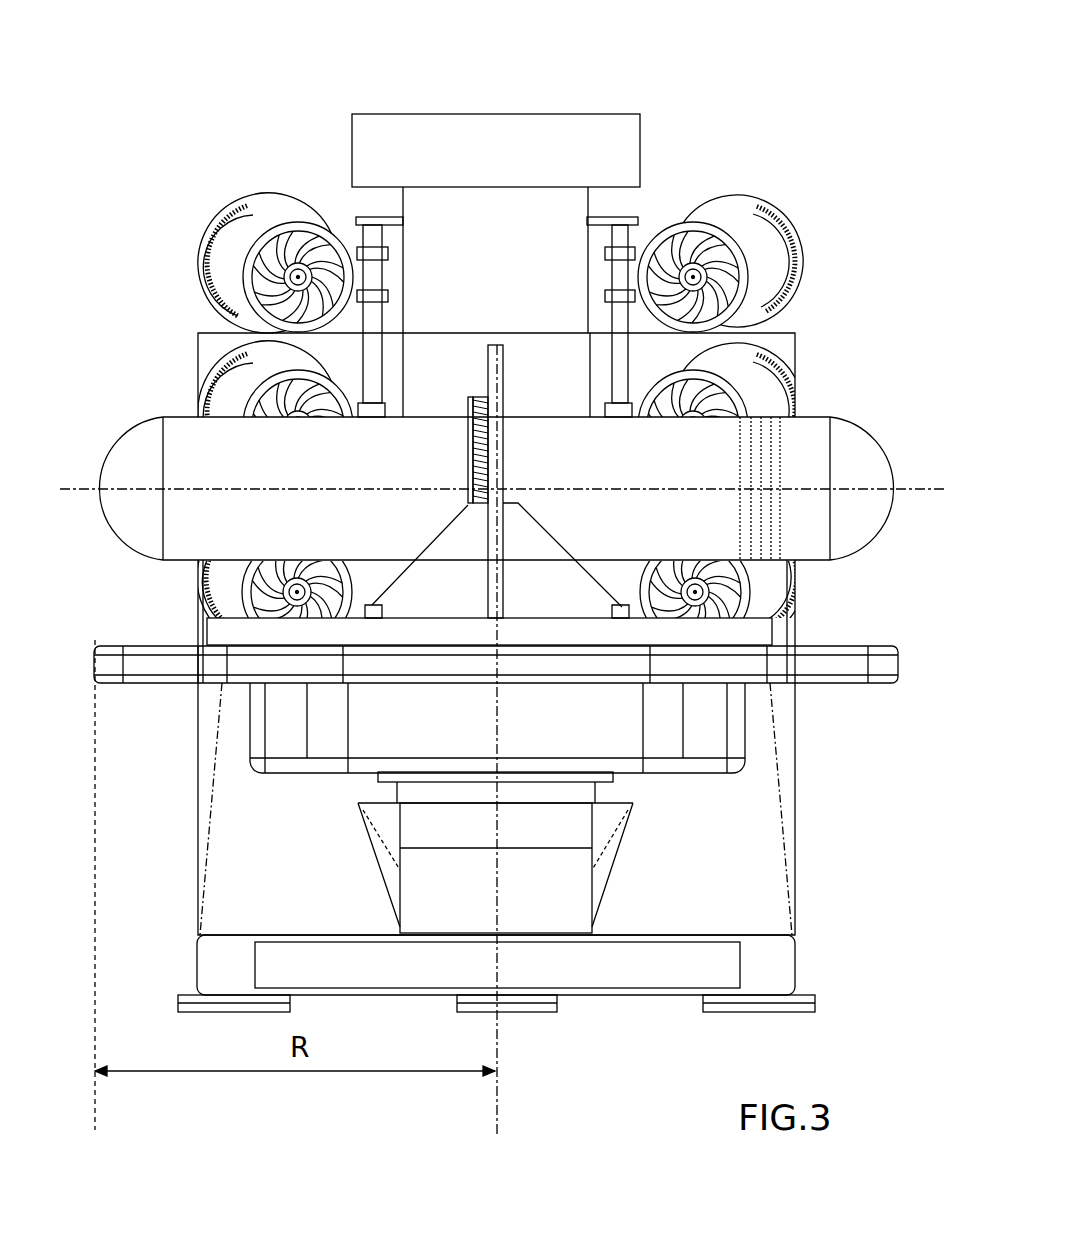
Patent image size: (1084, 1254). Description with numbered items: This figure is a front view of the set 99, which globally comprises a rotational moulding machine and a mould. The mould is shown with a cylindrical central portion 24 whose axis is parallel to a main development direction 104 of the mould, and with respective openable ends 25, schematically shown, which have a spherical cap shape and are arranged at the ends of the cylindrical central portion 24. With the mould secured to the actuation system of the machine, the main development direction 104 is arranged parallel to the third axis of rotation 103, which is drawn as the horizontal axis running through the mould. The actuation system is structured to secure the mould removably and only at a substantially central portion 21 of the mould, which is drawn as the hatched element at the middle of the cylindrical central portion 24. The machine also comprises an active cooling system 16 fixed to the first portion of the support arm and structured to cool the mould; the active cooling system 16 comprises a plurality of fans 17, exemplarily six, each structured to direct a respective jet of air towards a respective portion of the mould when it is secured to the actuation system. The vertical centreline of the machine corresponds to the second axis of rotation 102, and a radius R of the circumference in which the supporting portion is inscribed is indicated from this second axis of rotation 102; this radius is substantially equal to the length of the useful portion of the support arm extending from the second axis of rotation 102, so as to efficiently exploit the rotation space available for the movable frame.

The set 99 is at (178, 67).
The active cooling system 16 is at (214, 195).
The fans 17 is at (738, 240).
The substantially central portion of the mould 21 is at (464, 372).
The cylindrical central portion 24 is at (200, 548).
The openable ends 25 is at (155, 402).
The second axis of rotation 102 is at (497, 1097).
The third axis of rotation 103 is at (511, 425).
The main development direction 104 is at (947, 489).